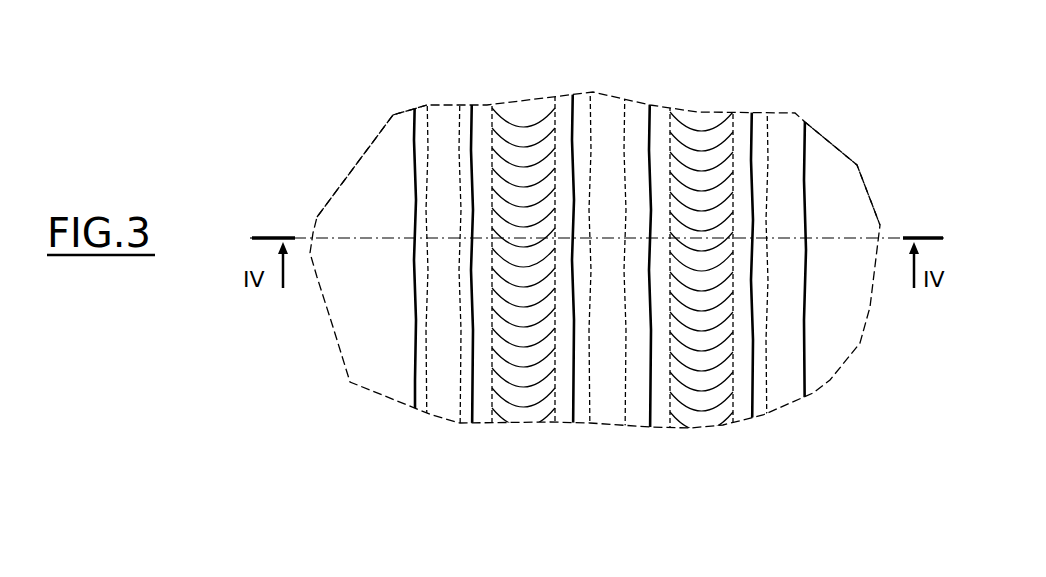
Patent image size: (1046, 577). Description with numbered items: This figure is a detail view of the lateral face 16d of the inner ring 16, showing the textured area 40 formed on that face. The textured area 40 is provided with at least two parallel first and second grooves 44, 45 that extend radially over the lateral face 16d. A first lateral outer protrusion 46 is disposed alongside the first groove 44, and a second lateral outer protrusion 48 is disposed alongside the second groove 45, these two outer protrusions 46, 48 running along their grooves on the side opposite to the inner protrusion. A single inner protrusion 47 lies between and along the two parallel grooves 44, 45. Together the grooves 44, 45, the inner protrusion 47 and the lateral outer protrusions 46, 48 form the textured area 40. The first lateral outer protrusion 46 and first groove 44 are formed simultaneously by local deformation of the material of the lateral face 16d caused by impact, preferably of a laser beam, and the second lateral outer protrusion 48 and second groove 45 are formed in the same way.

The inner ring 16 is at (812, 102).
The lateral face of the inner ring 16d is at (845, 183).
The textured area 40 is at (384, 126).
The first groove 44 is at (522, 403).
The second groove 45 is at (702, 403).
The first lateral outer protrusion 46 is at (442, 395).
The single inner protrusion 47 is at (608, 400).
The second lateral outer protrusion 48 is at (785, 397).